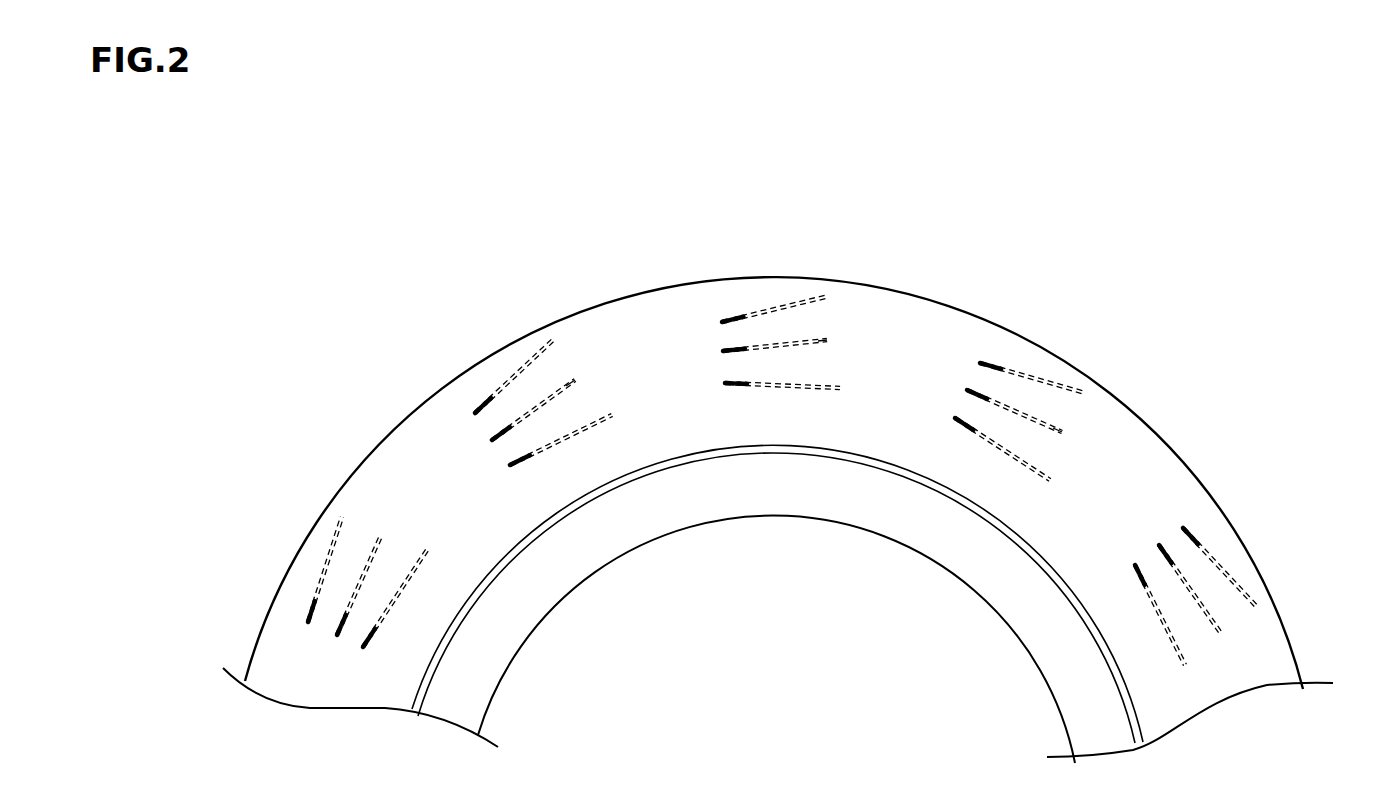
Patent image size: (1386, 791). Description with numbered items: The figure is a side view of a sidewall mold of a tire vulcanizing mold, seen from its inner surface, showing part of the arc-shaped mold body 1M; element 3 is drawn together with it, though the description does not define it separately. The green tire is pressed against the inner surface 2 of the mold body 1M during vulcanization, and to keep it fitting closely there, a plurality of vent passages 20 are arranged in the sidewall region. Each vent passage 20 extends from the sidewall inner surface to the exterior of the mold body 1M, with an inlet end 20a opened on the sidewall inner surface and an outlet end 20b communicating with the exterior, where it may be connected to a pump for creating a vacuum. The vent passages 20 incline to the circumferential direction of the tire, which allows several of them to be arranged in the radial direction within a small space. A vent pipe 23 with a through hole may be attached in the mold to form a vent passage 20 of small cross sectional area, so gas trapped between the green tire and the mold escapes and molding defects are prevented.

The mold body 1M is at (287, 657).
The inner surface of the mold body 2 is at (1142, 487).
The tread edge / shoulder (6) 3 is at (352, 473).
The vent passage 20 is at (505, 378).
The inlet end 20a is at (490, 440).
The outlet end 20b is at (575, 380).
The vent pipe 23 is at (475, 413).